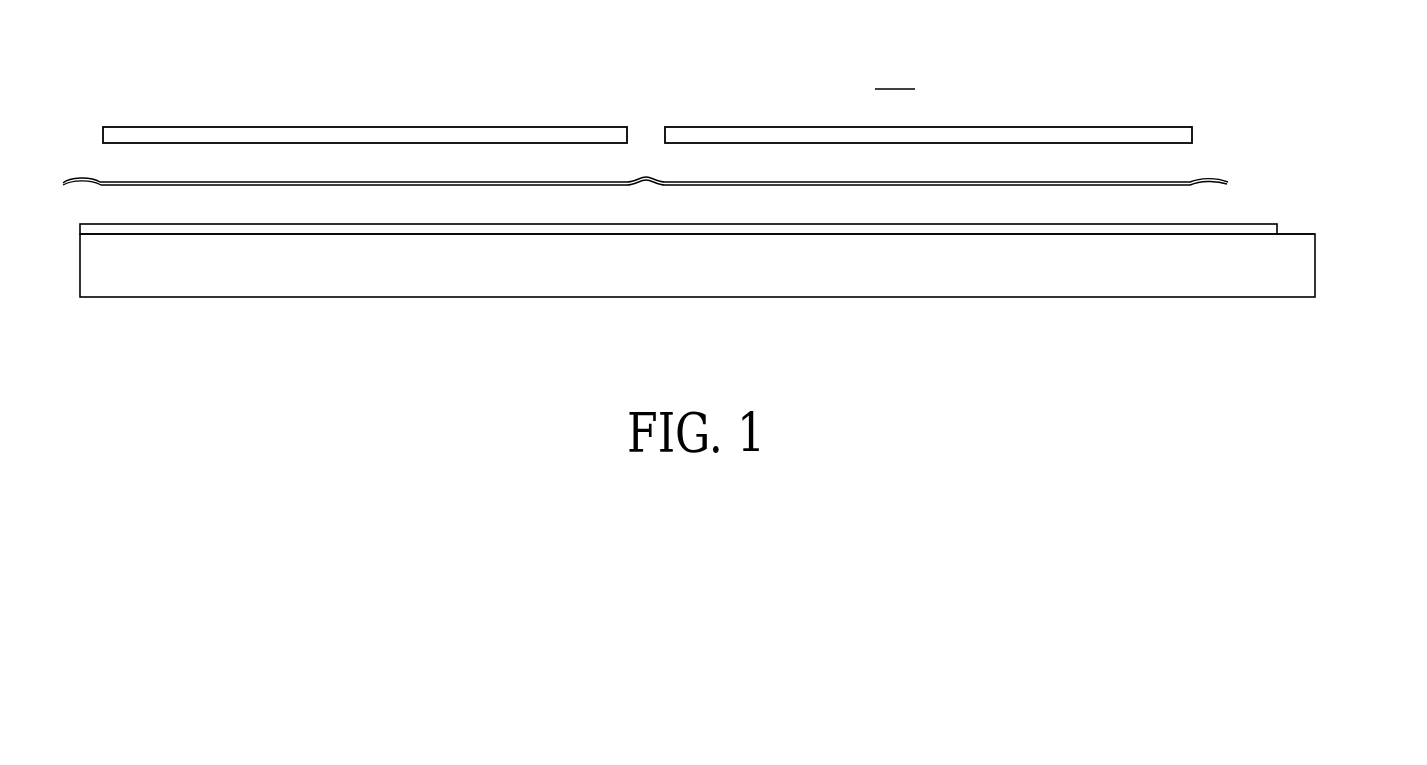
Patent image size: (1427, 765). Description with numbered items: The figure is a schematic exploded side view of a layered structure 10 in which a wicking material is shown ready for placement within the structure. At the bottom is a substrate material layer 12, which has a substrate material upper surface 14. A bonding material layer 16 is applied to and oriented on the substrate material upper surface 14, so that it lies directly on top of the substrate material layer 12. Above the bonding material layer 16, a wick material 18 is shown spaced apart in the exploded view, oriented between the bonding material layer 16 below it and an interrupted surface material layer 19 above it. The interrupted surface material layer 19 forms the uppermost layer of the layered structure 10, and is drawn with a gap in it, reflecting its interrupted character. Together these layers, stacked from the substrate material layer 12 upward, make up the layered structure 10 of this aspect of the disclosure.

The layered structure 10 is at (895, 74).
The substrate material layer 12 is at (1316, 298).
The substrate material upper surface 14 is at (1316, 234).
The bonding material layer 16 is at (1278, 223).
The wick material 18 is at (1230, 182).
The interrupted surface material layer 19 is at (1195, 129).